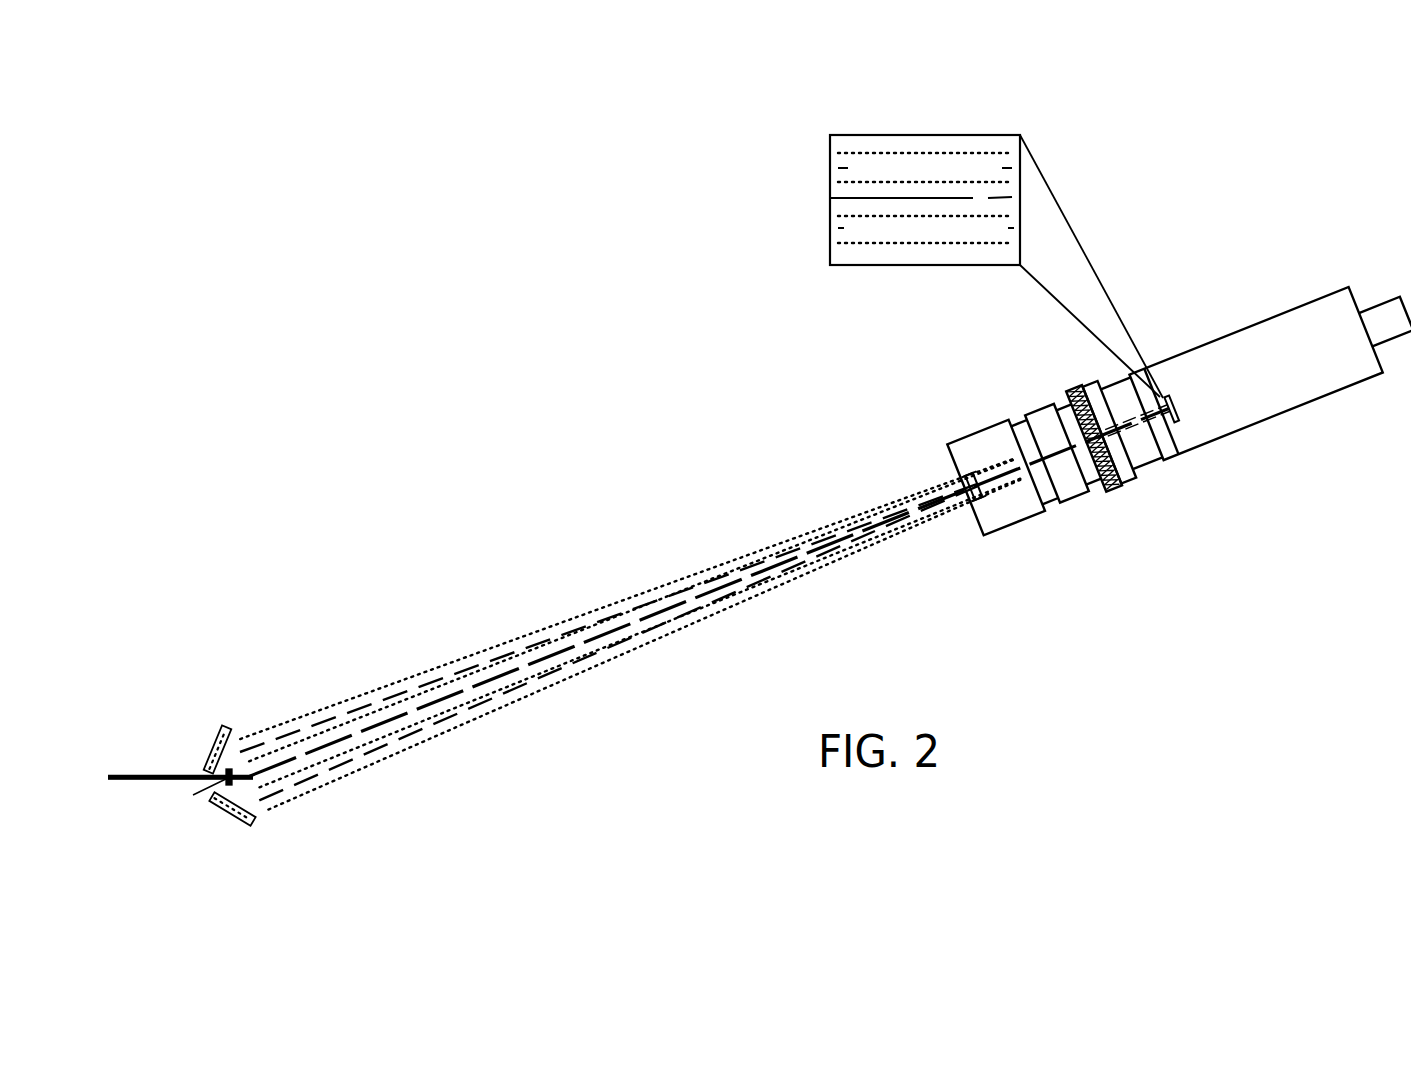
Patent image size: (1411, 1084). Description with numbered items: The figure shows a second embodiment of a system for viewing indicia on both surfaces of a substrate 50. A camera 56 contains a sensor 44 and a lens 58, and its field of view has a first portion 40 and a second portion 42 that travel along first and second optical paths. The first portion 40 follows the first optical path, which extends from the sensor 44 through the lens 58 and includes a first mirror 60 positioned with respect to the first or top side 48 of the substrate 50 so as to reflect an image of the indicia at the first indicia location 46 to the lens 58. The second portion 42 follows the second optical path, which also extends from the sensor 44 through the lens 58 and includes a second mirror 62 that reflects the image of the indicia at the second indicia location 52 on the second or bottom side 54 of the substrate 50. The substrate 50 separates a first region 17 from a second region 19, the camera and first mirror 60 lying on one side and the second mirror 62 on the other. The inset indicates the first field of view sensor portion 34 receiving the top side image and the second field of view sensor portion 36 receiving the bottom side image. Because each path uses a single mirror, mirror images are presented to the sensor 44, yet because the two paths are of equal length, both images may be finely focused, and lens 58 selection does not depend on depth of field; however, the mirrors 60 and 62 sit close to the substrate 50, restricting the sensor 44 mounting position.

The first region 17 is at (488, 596).
The second region 19 is at (216, 840).
The first field of view sensor portion 34 is at (830, 160).
The second field of view sensor portion 36 is at (830, 237).
The first portion of field of view 40 is at (533, 643).
The second portion of field of view 42 is at (535, 673).
The sensor 44 is at (1178, 393).
The first indicia location 46 is at (230, 770).
The first or top side 48 is at (160, 773).
The substrate 50 is at (125, 782).
The second indicia location 52 is at (233, 787).
The second or bottom side 54 is at (182, 783).
The camera 56 is at (1303, 300).
The lens 58 is at (962, 472).
The first mirror 60 is at (210, 753).
The second mirror 62 is at (230, 818).